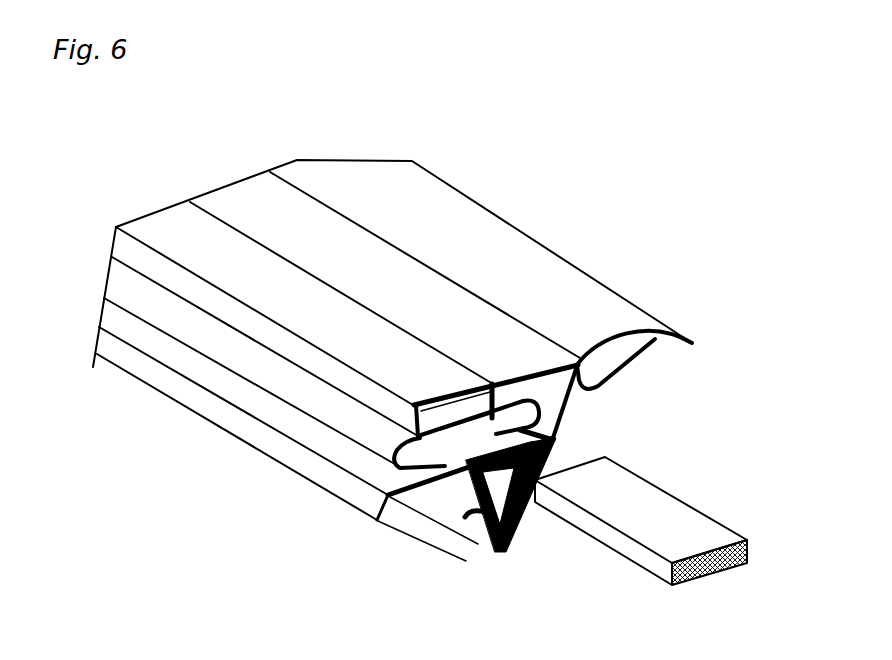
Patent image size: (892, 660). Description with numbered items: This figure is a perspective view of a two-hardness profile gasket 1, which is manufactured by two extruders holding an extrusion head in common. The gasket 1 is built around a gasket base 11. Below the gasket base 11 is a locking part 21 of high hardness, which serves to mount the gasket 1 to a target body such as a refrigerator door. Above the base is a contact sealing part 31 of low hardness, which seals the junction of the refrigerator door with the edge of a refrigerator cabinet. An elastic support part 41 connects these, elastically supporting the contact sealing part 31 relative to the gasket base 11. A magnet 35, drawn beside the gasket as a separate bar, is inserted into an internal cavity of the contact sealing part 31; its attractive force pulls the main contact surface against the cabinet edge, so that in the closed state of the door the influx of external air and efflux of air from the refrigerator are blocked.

The two-hardness profile gasket 1 is at (680, 272).
The gasket base 11 is at (403, 497).
The locking part 21 is at (482, 537).
The contact sealing part 31 is at (403, 418).
The magnet 35 is at (672, 497).
The elastic support part 41 is at (585, 400).